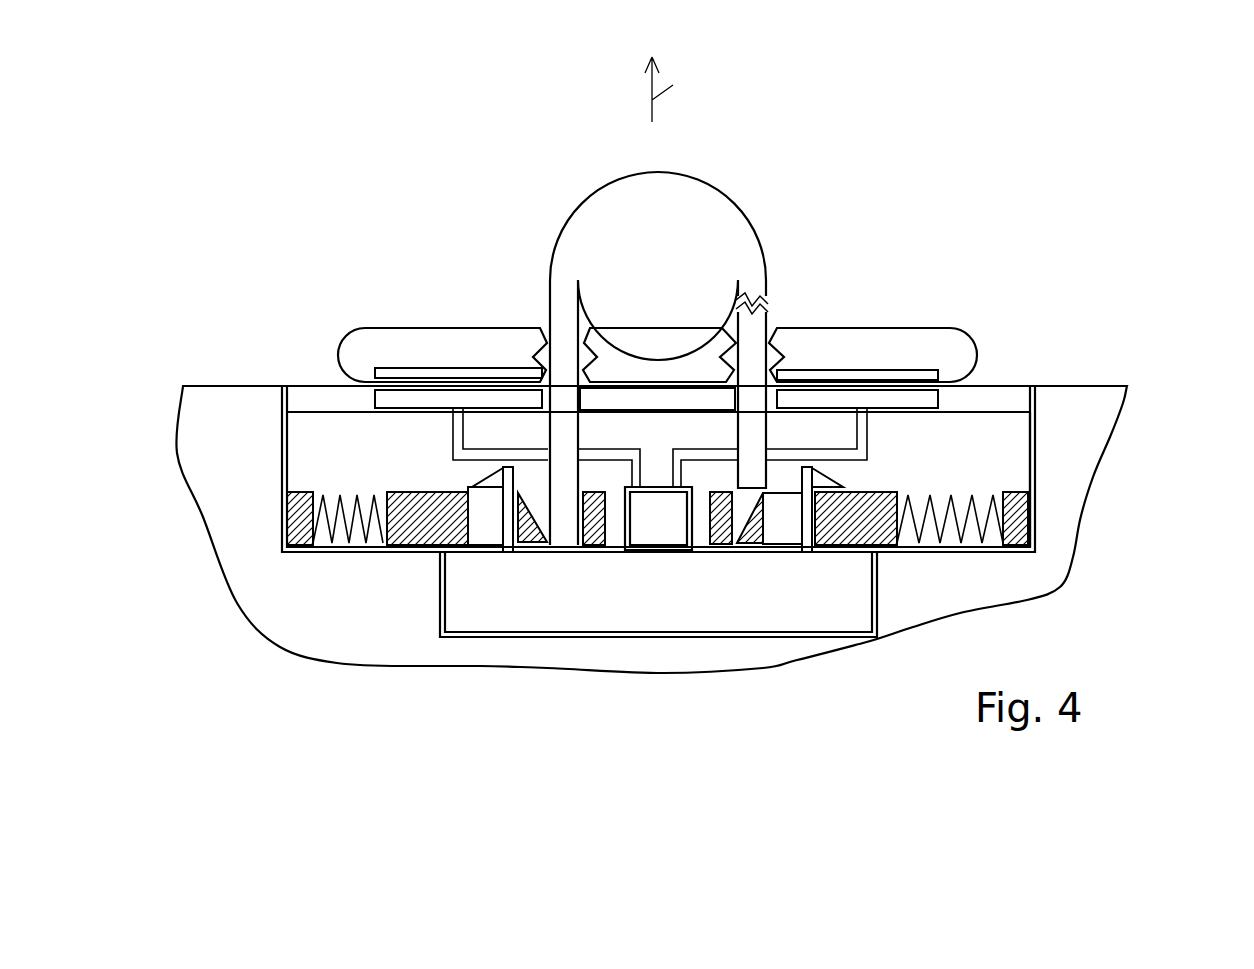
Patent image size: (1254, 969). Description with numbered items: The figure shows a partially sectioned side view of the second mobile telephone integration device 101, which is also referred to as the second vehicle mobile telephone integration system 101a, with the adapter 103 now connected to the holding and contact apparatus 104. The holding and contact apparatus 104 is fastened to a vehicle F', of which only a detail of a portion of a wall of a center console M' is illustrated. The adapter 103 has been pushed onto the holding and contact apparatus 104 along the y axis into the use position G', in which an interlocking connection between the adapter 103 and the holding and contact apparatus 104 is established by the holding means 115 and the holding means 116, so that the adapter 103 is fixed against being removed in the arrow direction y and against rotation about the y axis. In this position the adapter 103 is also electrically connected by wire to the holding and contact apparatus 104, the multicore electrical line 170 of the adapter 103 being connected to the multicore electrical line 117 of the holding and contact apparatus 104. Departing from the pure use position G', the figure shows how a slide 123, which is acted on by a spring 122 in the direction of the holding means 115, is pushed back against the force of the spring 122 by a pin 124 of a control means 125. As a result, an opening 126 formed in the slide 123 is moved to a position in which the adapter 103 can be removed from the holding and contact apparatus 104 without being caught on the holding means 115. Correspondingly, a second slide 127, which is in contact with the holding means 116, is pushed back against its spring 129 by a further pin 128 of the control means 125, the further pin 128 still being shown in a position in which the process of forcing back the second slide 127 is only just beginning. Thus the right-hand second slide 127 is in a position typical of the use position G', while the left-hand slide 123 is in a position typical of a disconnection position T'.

The mobile telephone integration device 101 is at (1062, 153).
The vehicle mobile telephone integration system 101a is at (658, 469).
The adapter 103 is at (1010, 443).
The holding and contact apparatus 104 is at (848, 597).
The holding means 115 is at (498, 487).
The holding means 116 is at (817, 477).
The multicore electrical line 117 is at (694, 430).
The spring 122 is at (347, 537).
The slide 123 is at (407, 542).
The pin 124 is at (567, 343).
The control means 125 is at (698, 158).
The opening 126 is at (488, 527).
The second slide 127 is at (830, 540).
The further pin 128 is at (748, 440).
The spring 129 is at (953, 507).
The multicore electrical line 170 is at (652, 527).
The disconnection position T' is at (165, 187).
The use position G' is at (1133, 259).
The vehicle F' is at (1108, 480).
The center console M' is at (676, 529).
The y axis y is at (668, 89).